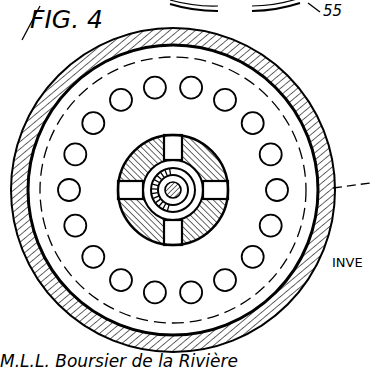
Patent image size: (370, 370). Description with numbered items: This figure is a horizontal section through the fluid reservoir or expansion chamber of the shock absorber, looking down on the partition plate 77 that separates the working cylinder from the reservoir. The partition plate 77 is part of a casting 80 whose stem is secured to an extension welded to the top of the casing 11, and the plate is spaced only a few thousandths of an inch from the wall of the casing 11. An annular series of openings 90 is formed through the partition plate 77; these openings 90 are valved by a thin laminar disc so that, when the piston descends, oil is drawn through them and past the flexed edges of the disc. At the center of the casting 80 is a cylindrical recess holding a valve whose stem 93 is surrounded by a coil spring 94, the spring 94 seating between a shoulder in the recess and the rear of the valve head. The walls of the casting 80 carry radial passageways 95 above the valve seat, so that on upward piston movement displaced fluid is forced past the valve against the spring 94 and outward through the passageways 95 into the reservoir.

The casing 11 is at (328, 142).
The partition plate 77 is at (252, 103).
The casting 80 is at (175, 196).
The openings 90 is at (189, 90).
The stem 93 is at (178, 181).
The coil spring 94 is at (152, 216).
The radial passageways 95 is at (160, 156).